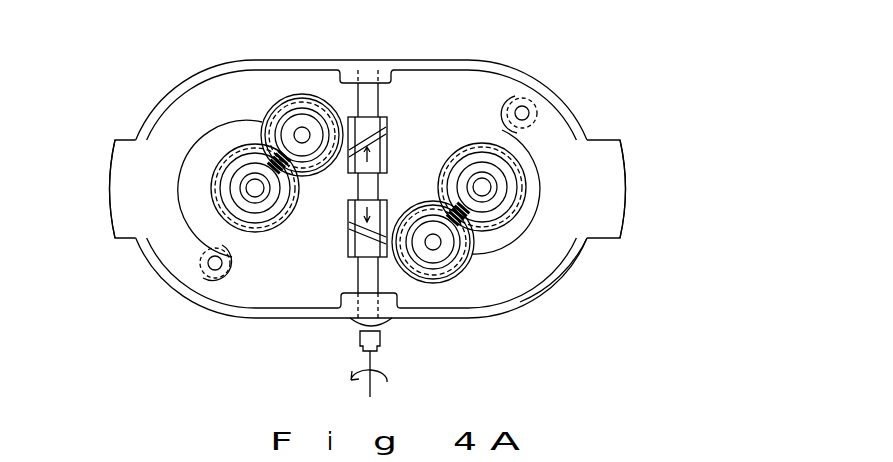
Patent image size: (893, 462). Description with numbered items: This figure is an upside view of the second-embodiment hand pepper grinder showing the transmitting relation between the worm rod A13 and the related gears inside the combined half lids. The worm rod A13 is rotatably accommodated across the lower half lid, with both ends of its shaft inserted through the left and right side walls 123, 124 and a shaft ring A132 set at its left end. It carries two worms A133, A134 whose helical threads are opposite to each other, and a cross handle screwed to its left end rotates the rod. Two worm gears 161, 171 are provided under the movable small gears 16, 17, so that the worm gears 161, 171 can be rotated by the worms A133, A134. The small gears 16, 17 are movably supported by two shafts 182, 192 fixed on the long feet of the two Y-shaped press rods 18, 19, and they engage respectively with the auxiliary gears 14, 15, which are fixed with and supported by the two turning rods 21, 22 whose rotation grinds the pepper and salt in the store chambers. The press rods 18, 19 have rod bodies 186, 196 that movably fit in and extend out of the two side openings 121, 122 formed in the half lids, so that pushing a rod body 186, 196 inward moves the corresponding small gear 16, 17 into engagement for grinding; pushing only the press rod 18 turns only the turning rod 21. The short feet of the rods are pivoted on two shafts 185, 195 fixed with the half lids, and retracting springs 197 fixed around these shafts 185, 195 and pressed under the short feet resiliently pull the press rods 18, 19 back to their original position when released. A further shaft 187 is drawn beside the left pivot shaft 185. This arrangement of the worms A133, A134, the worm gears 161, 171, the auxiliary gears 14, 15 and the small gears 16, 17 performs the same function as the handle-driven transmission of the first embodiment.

The auxiliary gear 14 is at (210, 140).
The auxiliary gear 15 is at (483, 143).
The small gear 16 is at (308, 115).
The small gear 17 is at (455, 283).
The press rod 18 is at (113, 145).
The press rod 19 is at (607, 153).
The turning rod 21 is at (255, 197).
The turning rod 22 is at (486, 184).
The side opening 121 is at (145, 131).
The side opening 122 is at (589, 242).
The left side wall 123 is at (278, 313).
The right side wall 124 is at (423, 60).
The worm gear 161 is at (268, 98).
The worm gear 171 is at (470, 262).
The shaft 182 is at (301, 128).
The shaft 185 is at (208, 272).
The rod body 186 is at (110, 205).
The left idler shaft 187 is at (214, 269).
The shaft 192 is at (433, 250).
The shaft 195 is at (530, 108).
The rod body 196 is at (627, 197).
The retracting spring 197 is at (527, 100).
The worm rod A13 is at (376, 179).
The shaft ring A132 is at (351, 327).
The worm A133 is at (350, 247).
The worm A134 is at (387, 123).